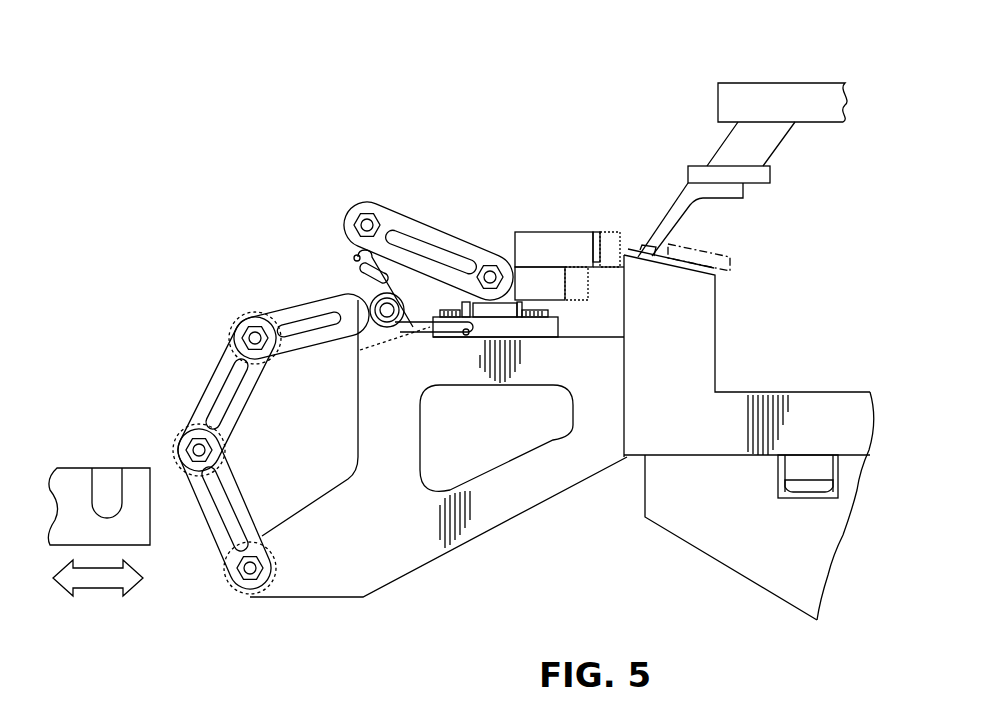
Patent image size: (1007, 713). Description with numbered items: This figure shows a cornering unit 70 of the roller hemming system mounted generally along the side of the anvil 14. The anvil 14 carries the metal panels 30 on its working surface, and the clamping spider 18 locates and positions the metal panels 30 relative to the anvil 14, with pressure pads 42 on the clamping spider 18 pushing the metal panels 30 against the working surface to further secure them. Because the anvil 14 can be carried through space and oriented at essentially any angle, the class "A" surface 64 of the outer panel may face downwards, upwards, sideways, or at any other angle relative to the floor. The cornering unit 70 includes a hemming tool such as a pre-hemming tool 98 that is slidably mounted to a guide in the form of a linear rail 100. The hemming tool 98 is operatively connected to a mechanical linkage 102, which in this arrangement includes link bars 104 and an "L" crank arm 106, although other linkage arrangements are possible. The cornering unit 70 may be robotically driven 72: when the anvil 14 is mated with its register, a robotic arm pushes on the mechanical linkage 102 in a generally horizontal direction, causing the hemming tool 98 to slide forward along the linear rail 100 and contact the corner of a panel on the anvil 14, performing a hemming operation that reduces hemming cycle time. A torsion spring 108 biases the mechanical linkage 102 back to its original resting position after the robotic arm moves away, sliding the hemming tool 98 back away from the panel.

The anvil 14 is at (705, 333).
The clamping spider 18 is at (760, 83).
The metal panels 30 is at (662, 205).
The pressure pads 42 is at (650, 234).
The class "A" surface 64 is at (718, 277).
The cornering unit 70 is at (378, 376).
The robotically driven 72 is at (100, 588).
The pre-hemming tool 98 is at (557, 232).
The linear rail 100 is at (500, 320).
The mechanical linkage 102 is at (196, 374).
The link bars 104 is at (407, 217).
The "L" crank arm 106 is at (313, 302).
The torsion spring 108 is at (423, 333).